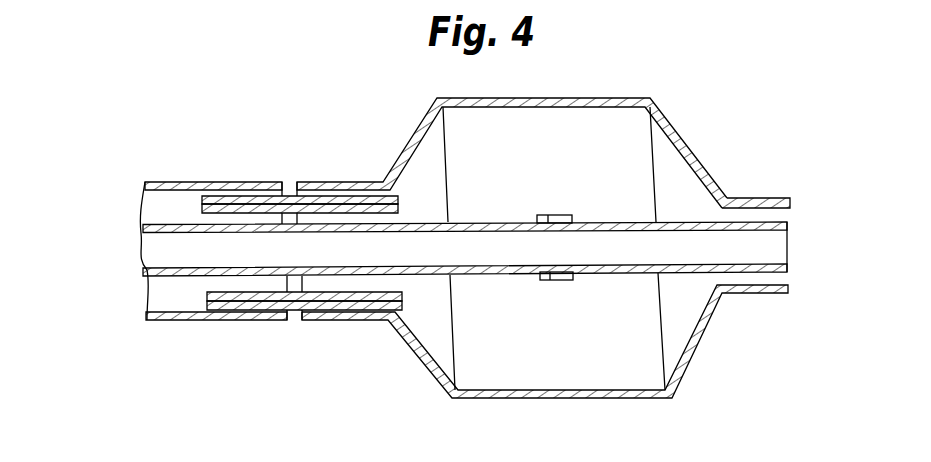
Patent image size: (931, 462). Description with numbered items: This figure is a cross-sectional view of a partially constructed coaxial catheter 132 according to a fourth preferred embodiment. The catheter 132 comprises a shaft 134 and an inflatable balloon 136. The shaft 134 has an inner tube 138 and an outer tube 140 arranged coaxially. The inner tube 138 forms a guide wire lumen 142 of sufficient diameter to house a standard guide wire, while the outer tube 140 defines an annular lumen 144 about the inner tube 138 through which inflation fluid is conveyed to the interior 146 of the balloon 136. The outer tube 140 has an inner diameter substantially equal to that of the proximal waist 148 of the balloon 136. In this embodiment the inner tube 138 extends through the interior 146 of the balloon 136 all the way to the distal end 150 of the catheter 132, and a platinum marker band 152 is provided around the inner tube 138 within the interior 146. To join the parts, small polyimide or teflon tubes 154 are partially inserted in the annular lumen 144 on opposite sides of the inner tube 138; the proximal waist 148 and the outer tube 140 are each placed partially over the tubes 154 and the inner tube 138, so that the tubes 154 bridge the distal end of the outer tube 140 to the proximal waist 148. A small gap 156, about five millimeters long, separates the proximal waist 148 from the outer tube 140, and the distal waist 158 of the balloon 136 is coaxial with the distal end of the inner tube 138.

The catheter 132 is at (190, 124).
The shaft 134 is at (269, 160).
The inflatable balloon 136 is at (695, 152).
The inner tube 138 is at (163, 277).
The outer tube 140 is at (183, 323).
The guide wire lumen 142 is at (158, 248).
The annular lumen 144 is at (163, 204).
The interior of the balloon 146 is at (511, 372).
The proximal waist 148 is at (372, 182).
The distal end 150 is at (759, 320).
The platinum marker band 152 is at (560, 280).
The polyimide or teflon tubes 154 is at (205, 195).
The gap 156 is at (290, 178).
The distal waist 158 is at (757, 185).